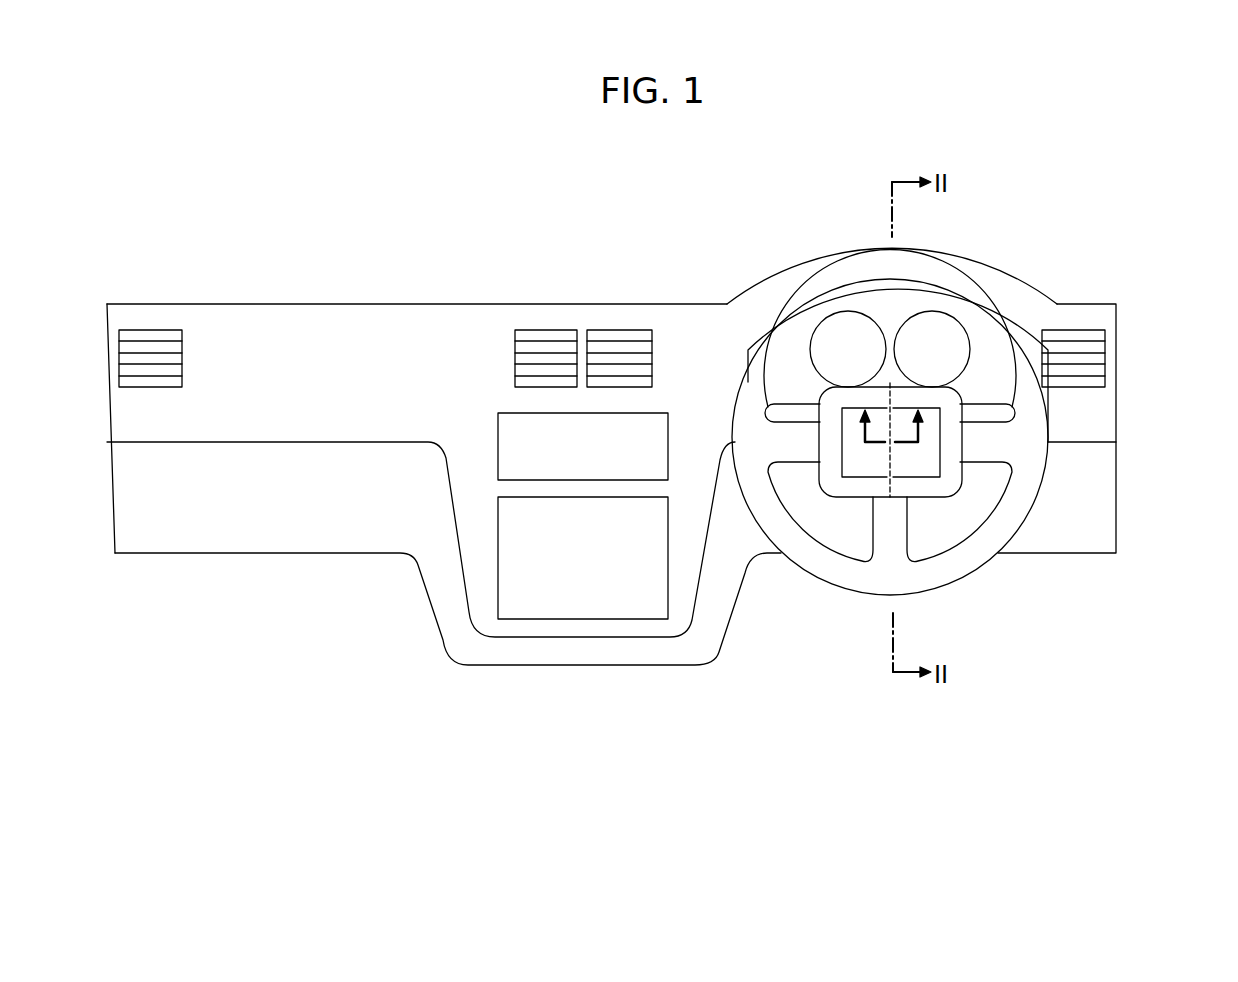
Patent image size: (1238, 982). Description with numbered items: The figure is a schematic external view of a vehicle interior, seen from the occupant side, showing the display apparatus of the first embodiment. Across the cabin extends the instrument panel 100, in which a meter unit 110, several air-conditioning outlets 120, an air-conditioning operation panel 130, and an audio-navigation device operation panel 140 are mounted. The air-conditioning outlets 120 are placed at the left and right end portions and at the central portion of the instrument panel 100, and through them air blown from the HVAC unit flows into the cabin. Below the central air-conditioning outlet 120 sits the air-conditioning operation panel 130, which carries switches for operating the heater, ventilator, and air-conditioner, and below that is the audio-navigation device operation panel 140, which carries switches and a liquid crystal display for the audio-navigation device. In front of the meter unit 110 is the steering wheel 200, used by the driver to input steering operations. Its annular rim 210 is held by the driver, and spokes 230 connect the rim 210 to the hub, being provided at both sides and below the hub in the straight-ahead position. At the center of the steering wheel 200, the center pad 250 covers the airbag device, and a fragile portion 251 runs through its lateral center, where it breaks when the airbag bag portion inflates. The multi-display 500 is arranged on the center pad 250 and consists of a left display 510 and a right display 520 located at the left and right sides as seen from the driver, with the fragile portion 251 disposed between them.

The instrument panel 100 is at (255, 245).
The meter unit 110 is at (795, 310).
The air-conditioning outlets 120 is at (147, 338).
The air-conditioning operation panel 130 is at (515, 438).
The audio-navigation device operation panel 140 is at (585, 598).
The steering wheel 200 is at (976, 452).
The rim 210 is at (973, 560).
The spokes 230 is at (890, 533).
The center pad 250 is at (950, 397).
The fragile portion 251 is at (887, 397).
The multi-display 500 is at (1025, 473).
The left display 510 is at (870, 463).
The right display 520 is at (923, 463).